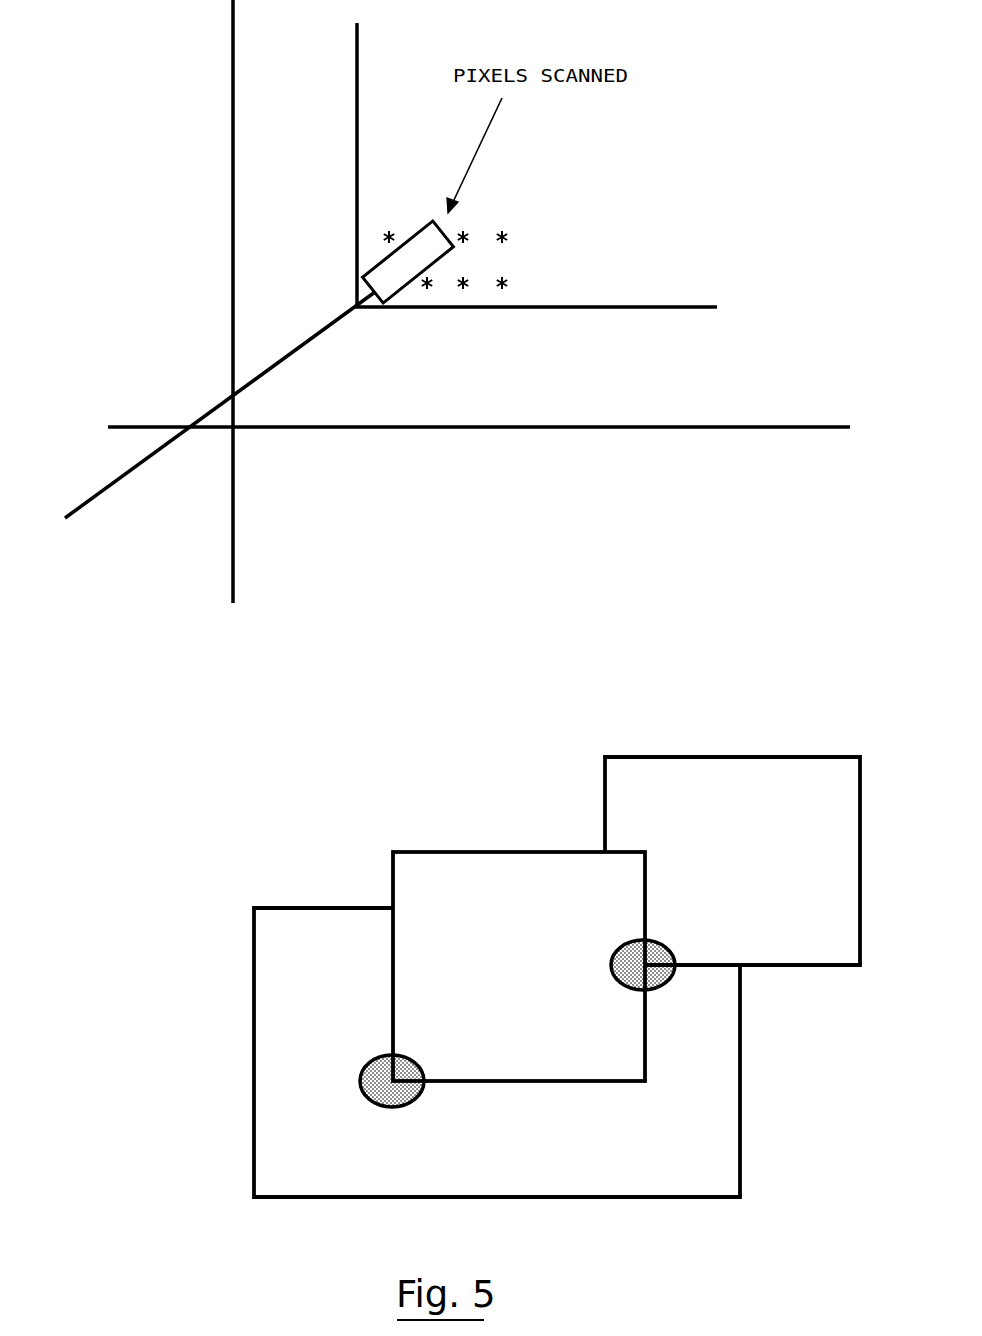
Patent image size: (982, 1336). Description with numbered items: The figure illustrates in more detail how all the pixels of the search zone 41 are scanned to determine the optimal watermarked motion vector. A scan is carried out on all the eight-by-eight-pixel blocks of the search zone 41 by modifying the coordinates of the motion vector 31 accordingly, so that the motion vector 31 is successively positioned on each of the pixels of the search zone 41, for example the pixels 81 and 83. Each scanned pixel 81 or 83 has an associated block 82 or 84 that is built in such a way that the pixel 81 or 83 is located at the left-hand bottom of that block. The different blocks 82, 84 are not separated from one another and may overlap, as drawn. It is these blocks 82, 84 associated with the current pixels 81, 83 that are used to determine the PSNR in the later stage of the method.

The motion vector 31 is at (153, 453).
The search zone 41 is at (603, 307).
The pixel 81 is at (407, 1105).
The block 82 is at (515, 850).
The pixel 83 is at (667, 945).
The block 84 is at (752, 755).